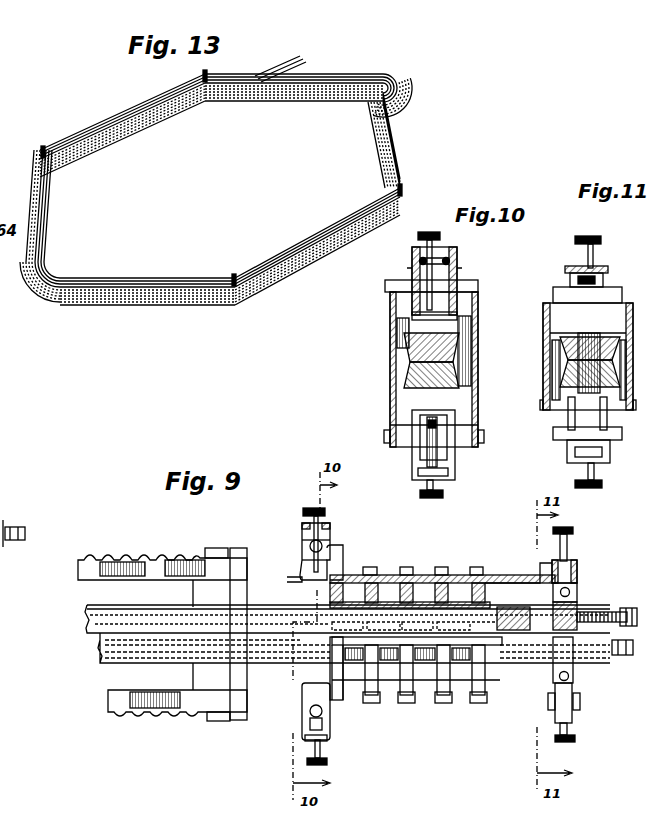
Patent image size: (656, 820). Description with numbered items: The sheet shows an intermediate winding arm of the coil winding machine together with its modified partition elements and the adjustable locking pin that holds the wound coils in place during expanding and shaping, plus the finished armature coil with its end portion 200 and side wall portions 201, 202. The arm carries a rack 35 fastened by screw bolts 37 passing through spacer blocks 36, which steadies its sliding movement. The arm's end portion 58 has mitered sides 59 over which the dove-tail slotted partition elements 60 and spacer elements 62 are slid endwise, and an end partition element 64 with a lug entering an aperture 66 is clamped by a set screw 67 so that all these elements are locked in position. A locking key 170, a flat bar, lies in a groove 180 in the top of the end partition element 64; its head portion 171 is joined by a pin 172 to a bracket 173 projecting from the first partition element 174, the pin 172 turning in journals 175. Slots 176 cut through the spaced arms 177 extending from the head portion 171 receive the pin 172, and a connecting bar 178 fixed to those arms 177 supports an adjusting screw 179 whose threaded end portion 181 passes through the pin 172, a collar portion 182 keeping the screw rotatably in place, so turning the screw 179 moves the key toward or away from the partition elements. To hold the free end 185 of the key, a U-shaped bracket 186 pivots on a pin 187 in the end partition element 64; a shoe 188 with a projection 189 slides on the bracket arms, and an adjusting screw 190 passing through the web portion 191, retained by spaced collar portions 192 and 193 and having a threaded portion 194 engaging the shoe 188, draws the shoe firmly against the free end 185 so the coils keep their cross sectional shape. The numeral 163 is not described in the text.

In FIG. 13, the end portion of the coil 200 is at (402, 92).
In FIG. 13, the side wall portions of the coil 201 is at (121, 116).
In FIG. 13, the side wall portions of the coil 202 is at (108, 277).
In FIG. 9, the rack 35 is at (120, 560).
In FIG. 9, the spacer block 36 is at (191, 594).
In FIG. 9, the screw bolt 37 is at (216, 548).
In FIG. 10, the end portion of the intermediate arm 58 is at (406, 341).
In FIG. 11, the end portion of the intermediate arm 58 is at (565, 346).
In FIG. 9, the end portion of the intermediate arm 58 is at (256, 617).
In FIG. 10, the mitered sides 59 is at (411, 373).
In FIG. 11, the mitered sides 59 is at (562, 379).
In FIG. 9, the mitered sides 59 is at (0, 510).
In FIG. 9, the partition element 60 is at (428, 695).
In FIG. 9, the spacer element 62 is at (470, 692).
In FIG. 11, the end partition element 64 is at (560, 333).
In FIG. 9, the end partition element 64 is at (487, 597).
In FIG. 11, the aperture 66 is at (588, 366).
In FIG. 9, the aperture 66 is at (583, 610).
In FIG. 9, the set screw 67 is at (25, 530).
In FIG. 10, the nut 163 is at (423, 257).
In FIG. 9, the nut 163 is at (304, 520).
In FIG. 9, the locking key 170 is at (466, 567).
In FIG. 10, the head portion 171 is at (415, 306).
In FIG. 9, the head portion 171 is at (302, 567).
In FIG. 10, the pin 172 is at (478, 287).
In FIG. 9, the pin 172 is at (320, 546).
In FIG. 9, the bracket 173 is at (338, 556).
In FIG. 9, the first partition element 174 is at (396, 575).
In FIG. 10, the journals 175 is at (457, 280).
In FIG. 9, the journals 175 is at (305, 708).
In FIG. 10, the slots 176 is at (412, 263).
In FIG. 9, the slots 176 is at (322, 726).
In FIG. 10, the spaced arms 177 is at (461, 269).
In FIG. 9, the spaced arms 177 is at (304, 736).
In FIG. 9, the connecting bar 178 is at (303, 533).
In FIG. 10, the adjusting screw 179 is at (436, 234).
In FIG. 9, the adjusting screw 179 is at (306, 508).
In FIG. 9, the groove 180 is at (478, 567).
In FIG. 9, the threaded end portion 181 is at (302, 540).
In FIG. 10, the collar portion 182 is at (440, 253).
In FIG. 9, the collar portion 182 is at (320, 531).
In FIG. 9, the free end of the locking key 185 is at (520, 575).
In FIG. 11, the U-shaped bracket 186 is at (604, 277).
In FIG. 9, the U-shaped bracket 186 is at (577, 566).
In FIG. 11, the pin 187 is at (549, 313).
In FIG. 9, the pin 187 is at (578, 592).
In FIG. 11, the shoe 188 is at (566, 284).
In FIG. 9, the shoe 188 is at (578, 575).
In FIG. 11, the projection 189 is at (553, 297).
In FIG. 9, the projection 189 is at (565, 530).
In FIG. 11, the adjusting screw 190 is at (595, 241).
In FIG. 9, the adjusting screw 190 is at (570, 545).
In FIG. 11, the web portion 191 is at (579, 268).
In FIG. 11, the collar portion 192 is at (600, 268).
In FIG. 11, the collar portion 193 is at (569, 276).
In FIG. 11, the threaded portion 194 is at (598, 299).